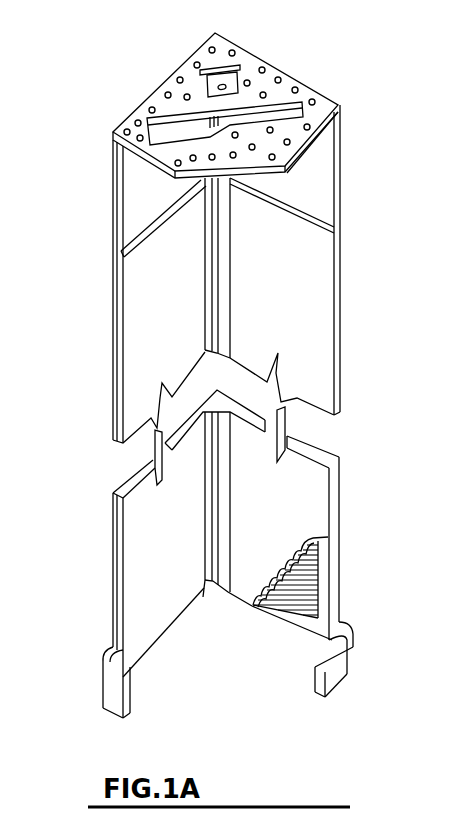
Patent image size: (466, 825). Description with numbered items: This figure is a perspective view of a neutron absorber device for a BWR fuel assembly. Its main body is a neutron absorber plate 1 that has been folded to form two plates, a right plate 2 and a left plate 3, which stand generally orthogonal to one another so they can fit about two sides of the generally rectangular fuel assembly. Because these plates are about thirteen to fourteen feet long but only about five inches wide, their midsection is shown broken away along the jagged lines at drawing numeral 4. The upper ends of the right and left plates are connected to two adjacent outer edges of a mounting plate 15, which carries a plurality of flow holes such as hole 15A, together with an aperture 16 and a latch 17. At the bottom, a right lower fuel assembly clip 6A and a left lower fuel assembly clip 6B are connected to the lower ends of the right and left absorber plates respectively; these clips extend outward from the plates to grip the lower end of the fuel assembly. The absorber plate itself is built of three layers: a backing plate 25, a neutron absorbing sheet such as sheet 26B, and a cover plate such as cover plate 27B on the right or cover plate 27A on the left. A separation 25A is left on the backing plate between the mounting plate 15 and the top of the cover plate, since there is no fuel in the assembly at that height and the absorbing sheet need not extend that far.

The neutron absorber plate 1 is at (342, 202).
The right plate 2 is at (342, 182).
The left plate 3 is at (113, 228).
The break lines 4 is at (310, 424).
The right lower fuel assembly clip 6A is at (333, 677).
The left lower fuel assembly clip 6B is at (120, 694).
The mounting plate 15 is at (263, 80).
The flow hole 15A is at (338, 118).
The aperture 16 is at (338, 104).
The latch 17 is at (243, 70).
The backing plate 25 is at (323, 142).
The separation 25A is at (133, 177).
The neutron absorbing sheet 26B is at (307, 558).
The cover plate 27A is at (143, 320).
The cover plate 27B is at (303, 278).